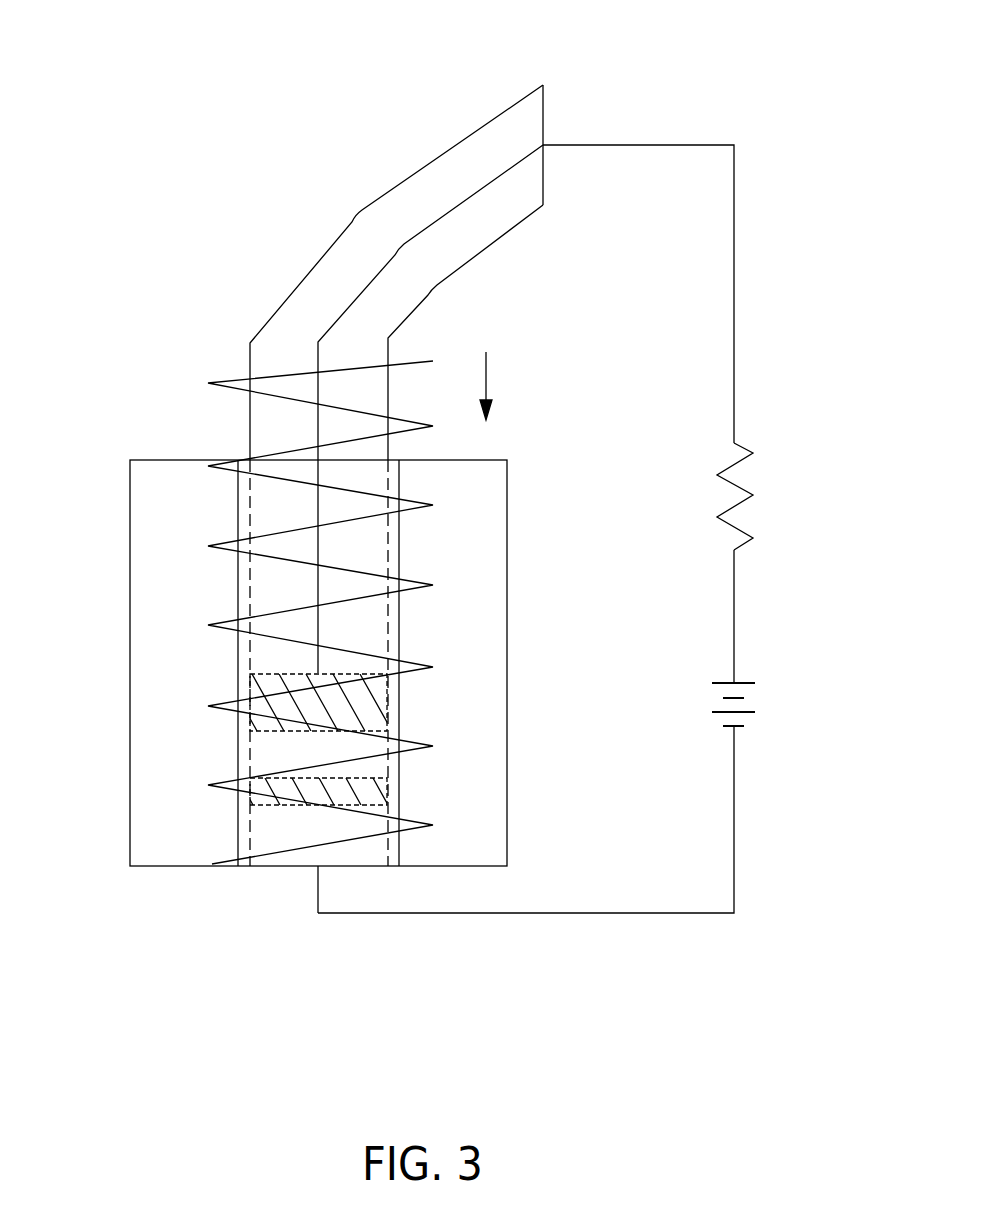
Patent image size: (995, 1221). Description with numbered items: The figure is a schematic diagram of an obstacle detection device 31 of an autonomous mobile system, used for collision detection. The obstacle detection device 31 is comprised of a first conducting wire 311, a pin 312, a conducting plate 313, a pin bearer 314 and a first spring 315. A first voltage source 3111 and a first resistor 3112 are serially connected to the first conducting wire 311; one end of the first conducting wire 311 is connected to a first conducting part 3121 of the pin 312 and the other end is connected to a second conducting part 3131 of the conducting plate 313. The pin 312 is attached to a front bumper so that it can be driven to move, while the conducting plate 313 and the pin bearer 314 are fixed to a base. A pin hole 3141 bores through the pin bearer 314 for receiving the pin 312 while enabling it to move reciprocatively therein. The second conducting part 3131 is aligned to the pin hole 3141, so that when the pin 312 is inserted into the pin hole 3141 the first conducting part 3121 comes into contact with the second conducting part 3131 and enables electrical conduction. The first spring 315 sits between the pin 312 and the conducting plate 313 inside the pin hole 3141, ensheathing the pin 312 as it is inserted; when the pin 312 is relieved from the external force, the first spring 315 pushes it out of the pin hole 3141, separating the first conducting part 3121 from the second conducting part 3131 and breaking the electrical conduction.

The obstacle detection device 31 is at (178, 137).
The first conducting wire 311 is at (665, 144).
The first voltage source 3111 is at (740, 728).
The first resistor 3112 is at (755, 452).
The pin 312 is at (318, 262).
The first conducting part 3121 is at (250, 681).
The conducting plate 313 is at (293, 867).
The second conducting part 3131 is at (250, 790).
The pin bearer 314 is at (130, 530).
The pin hole 3141 is at (232, 590).
The first spring 315 is at (232, 388).